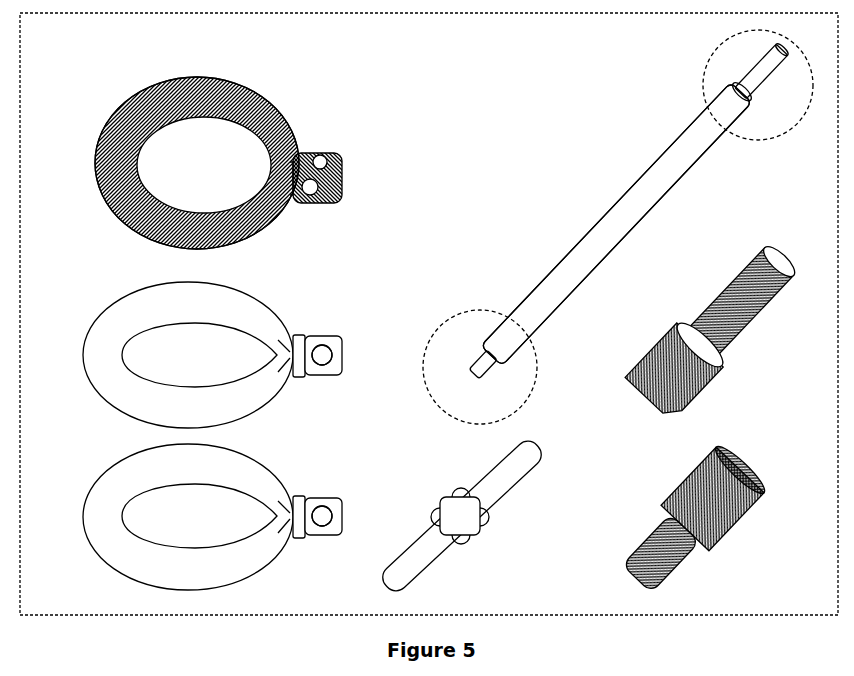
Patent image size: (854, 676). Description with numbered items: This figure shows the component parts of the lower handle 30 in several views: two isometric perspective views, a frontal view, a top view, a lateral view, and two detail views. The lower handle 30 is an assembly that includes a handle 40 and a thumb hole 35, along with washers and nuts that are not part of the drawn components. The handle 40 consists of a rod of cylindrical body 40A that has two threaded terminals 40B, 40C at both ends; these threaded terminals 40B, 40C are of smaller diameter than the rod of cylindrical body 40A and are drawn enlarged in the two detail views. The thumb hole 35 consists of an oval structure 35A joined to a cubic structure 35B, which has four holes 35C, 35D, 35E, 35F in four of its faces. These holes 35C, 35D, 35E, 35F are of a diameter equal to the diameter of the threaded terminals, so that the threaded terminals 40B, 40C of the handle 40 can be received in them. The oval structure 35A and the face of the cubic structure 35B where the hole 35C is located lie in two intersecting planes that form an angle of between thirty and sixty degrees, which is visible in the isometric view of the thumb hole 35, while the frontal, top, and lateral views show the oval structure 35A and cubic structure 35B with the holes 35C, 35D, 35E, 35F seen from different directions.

The lower handle 30 is at (420, 48).
The thumb hole 35 is at (208, 68).
The oval structure 35A is at (133, 105).
The cubic structure 35B is at (345, 170).
The hole 35C is at (320, 157).
The hole 35D is at (312, 200).
The hole 35E is at (322, 355).
The hole 35F is at (322, 516).
The handle 40 is at (605, 148).
The rod of cylindrical body 40A is at (620, 216).
The threaded terminal 40B is at (478, 372).
The threaded terminal 40C is at (760, 80).